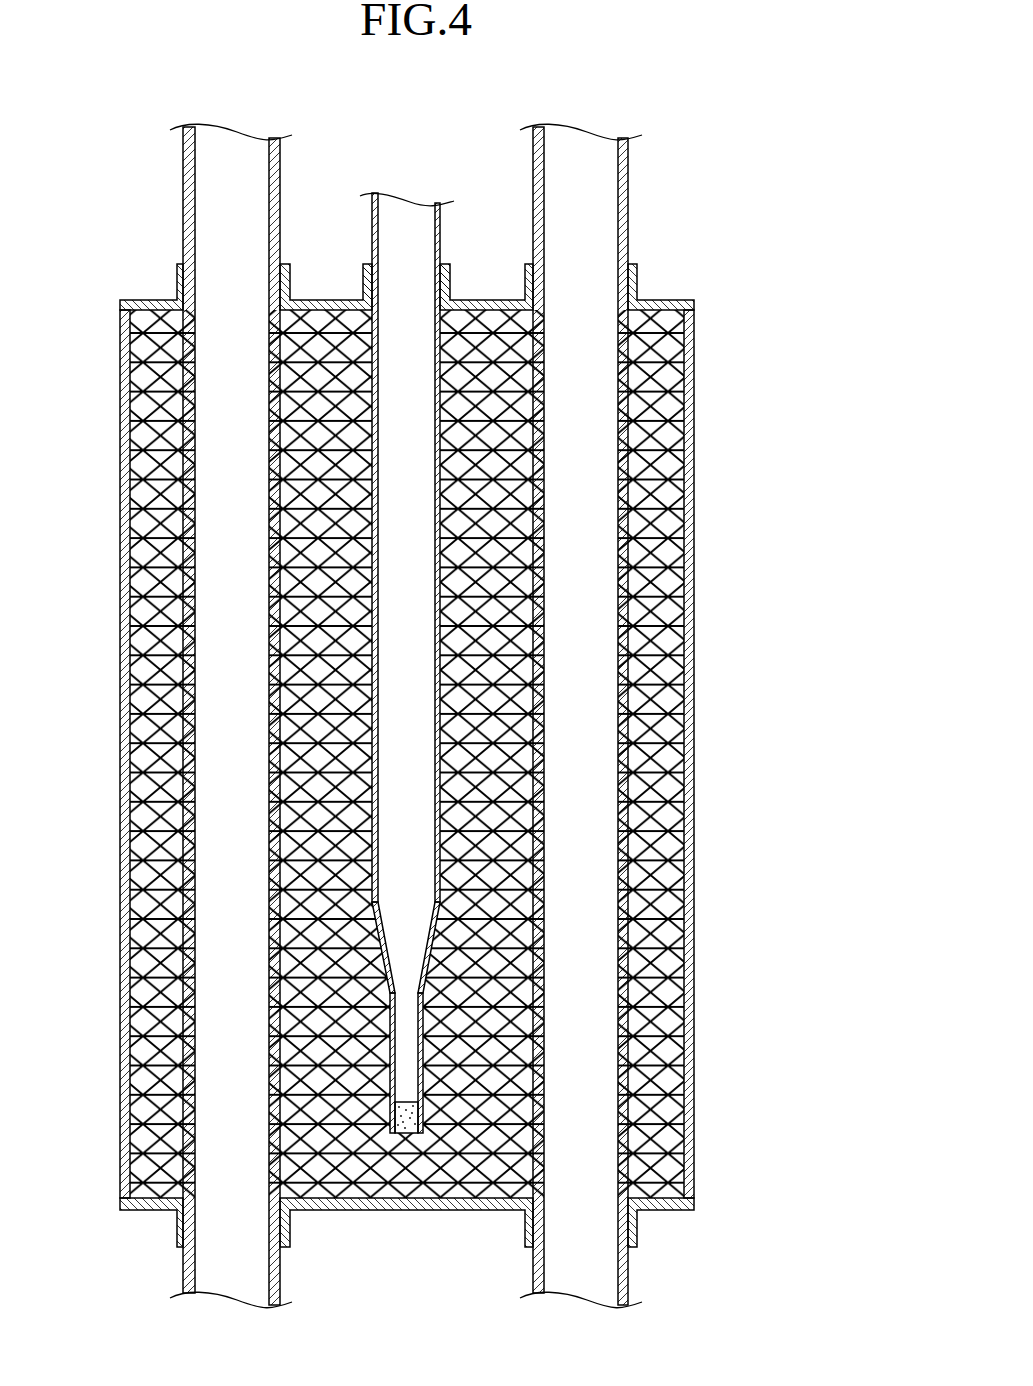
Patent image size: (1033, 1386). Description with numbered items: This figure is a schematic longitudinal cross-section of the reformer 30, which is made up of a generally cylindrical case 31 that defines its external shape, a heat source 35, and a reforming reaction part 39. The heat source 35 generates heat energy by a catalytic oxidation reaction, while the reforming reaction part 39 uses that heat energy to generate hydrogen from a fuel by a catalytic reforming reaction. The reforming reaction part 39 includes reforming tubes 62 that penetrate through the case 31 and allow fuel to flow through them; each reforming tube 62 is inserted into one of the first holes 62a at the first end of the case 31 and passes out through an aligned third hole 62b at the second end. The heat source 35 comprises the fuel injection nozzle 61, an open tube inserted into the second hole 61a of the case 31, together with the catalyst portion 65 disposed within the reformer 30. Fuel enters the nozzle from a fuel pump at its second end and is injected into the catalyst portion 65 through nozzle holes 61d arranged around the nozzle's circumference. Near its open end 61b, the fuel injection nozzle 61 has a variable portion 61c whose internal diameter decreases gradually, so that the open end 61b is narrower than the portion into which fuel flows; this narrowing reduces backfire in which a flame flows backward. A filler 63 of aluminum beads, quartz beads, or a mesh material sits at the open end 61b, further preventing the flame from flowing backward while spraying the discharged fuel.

The reformer 30 is at (714, 378).
The case 31 is at (694, 482).
The heat source 35 is at (470, 131).
The reforming reaction part 39 is at (638, 788).
The fuel injection nozzle 61 is at (392, 708).
The second hole 61a is at (365, 283).
The open end 61b is at (423, 1128).
The variable portion 61c is at (388, 955).
The nozzle holes 61d is at (370, 383).
The reforming tube 62 is at (466, 716).
The first holes 62a is at (434, 258).
The third holes 62b is at (635, 1228).
The filler 63 is at (403, 1135).
The catalyst portion 65 is at (477, 330).